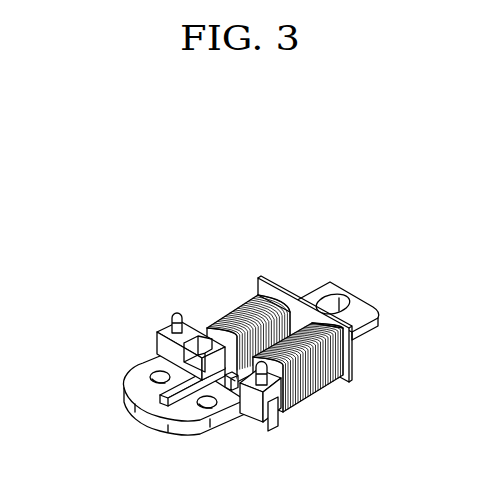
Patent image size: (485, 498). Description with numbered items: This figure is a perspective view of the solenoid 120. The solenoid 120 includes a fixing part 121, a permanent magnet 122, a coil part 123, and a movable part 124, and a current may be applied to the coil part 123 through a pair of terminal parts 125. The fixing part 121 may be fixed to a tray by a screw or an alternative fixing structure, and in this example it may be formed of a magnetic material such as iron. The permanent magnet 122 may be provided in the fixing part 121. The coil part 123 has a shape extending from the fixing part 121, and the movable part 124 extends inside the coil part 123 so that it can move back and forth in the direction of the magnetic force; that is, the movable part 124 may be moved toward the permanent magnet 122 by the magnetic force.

The solenoid 120 is at (110, 245).
The fixing part 121 is at (150, 422).
The permanent magnet 122 is at (173, 388).
The coil part 123 is at (271, 312).
The movable part 124 is at (352, 298).
The terminal parts 125 is at (233, 328).